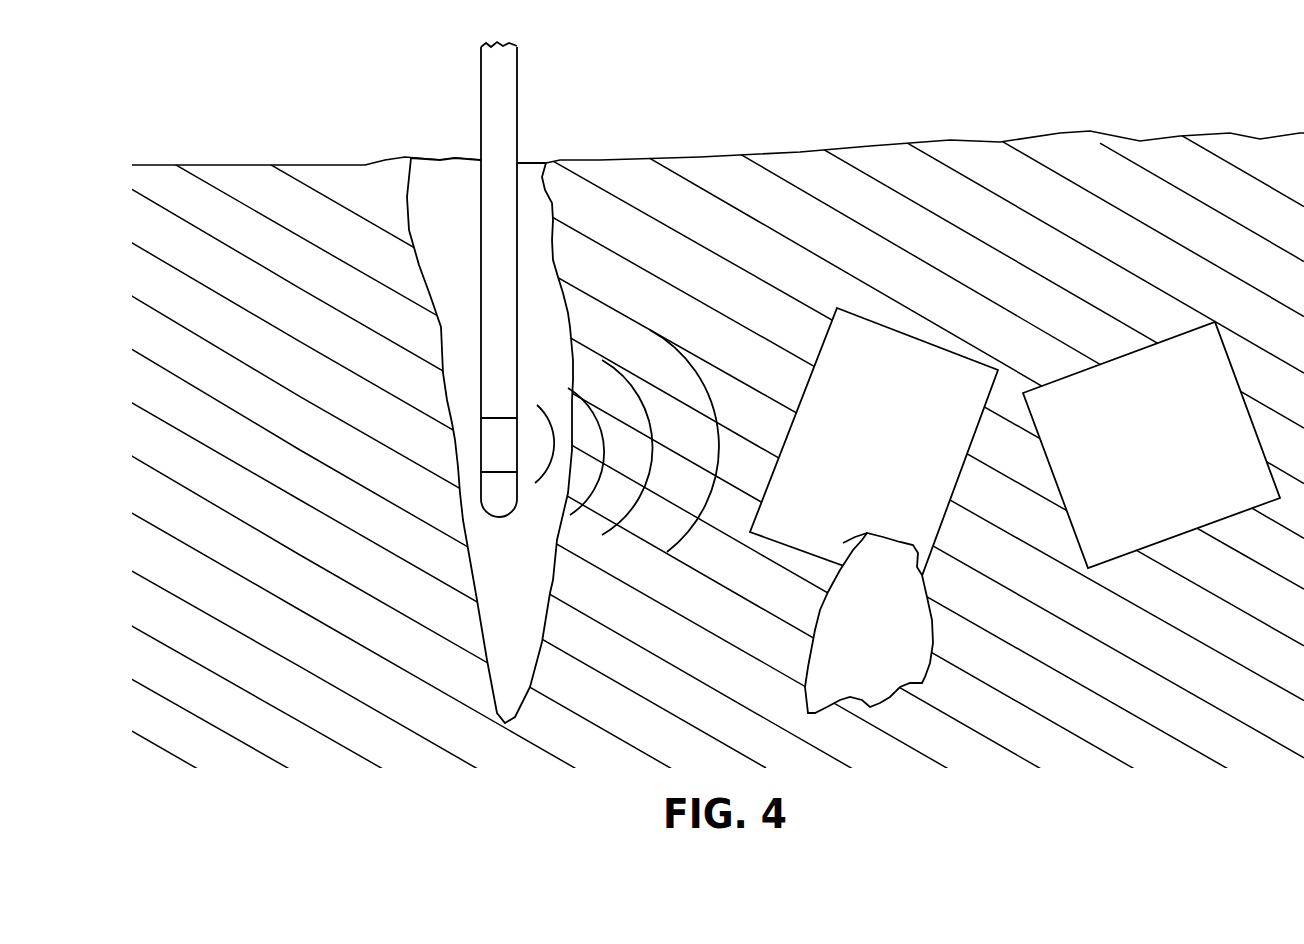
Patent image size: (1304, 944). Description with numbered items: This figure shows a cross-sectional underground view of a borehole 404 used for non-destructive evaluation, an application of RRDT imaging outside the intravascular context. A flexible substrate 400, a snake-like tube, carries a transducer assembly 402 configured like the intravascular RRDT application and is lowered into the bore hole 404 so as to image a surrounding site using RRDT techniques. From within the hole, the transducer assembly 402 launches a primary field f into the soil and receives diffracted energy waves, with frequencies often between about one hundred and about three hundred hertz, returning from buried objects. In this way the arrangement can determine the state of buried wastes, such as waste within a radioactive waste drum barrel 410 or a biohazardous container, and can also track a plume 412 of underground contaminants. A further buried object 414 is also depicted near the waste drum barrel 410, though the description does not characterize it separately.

The flexible substrate 400 is at (516, 90).
The transducer assembly 402 is at (482, 450).
The bore hole 404 is at (427, 173).
The radioactive waste drum barrel 410 is at (905, 437).
The plume 412 is at (888, 649).
The buried object 414 is at (1182, 451).
The primary field f is at (717, 405).